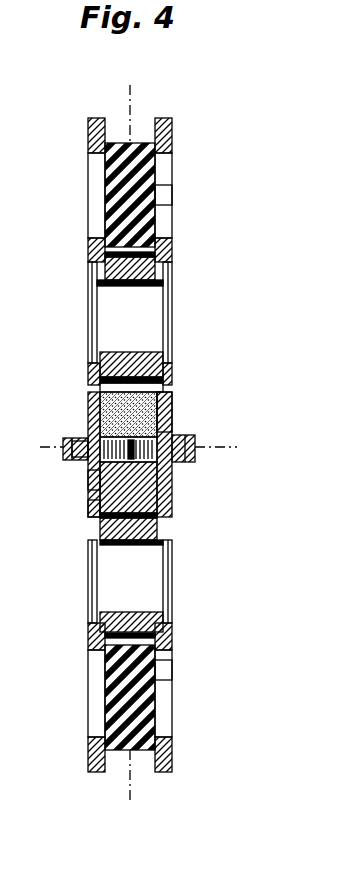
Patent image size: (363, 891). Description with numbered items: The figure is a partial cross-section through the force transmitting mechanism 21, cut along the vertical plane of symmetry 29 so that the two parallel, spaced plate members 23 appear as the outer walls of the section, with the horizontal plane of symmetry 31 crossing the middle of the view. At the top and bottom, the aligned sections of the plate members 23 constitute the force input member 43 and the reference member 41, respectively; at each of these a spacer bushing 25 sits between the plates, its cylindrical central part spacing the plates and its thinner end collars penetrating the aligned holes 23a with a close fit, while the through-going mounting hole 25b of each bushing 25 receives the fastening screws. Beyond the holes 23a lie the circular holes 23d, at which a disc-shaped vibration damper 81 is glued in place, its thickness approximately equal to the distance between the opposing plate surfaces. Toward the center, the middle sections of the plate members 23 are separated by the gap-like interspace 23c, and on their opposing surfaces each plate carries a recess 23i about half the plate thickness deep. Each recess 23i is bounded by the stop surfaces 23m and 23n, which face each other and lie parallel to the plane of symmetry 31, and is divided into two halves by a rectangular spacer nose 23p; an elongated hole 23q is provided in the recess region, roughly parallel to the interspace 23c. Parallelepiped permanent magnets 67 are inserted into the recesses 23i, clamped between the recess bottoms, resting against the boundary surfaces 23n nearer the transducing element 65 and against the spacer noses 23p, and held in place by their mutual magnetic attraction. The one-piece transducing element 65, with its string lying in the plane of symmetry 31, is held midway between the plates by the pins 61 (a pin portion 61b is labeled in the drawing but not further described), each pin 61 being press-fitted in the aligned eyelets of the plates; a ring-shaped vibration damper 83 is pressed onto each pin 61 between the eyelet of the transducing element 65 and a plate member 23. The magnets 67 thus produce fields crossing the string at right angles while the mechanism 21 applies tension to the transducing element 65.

The force transmitting mechanism 21 is at (87, 143).
The plate member 23 is at (95, 245).
The hole 23a is at (172, 277).
The interspace 23c is at (88, 437).
The circular hole 23d is at (163, 195).
The recess 23i is at (173, 318).
The boundary surface 23m is at (88, 517).
The boundary surface 23n is at (90, 482).
The spacer nose 23p is at (175, 418).
The elongated hole 23q is at (88, 384).
The spacer bushing 25 is at (112, 257).
The mounting hole 25b is at (95, 288).
The vertical plane of symmetry 29 is at (133, 795).
The horizontal plane of symmetry 31 is at (222, 444).
The reference member 41 is at (176, 478).
The force input member 43 is at (173, 143).
The pin 61 is at (68, 462).
The pin head 61b is at (66, 440).
The transducing element 65 is at (112, 560).
The permanent magnet 67 is at (165, 498).
The vibration damper 81 is at (140, 143).
The vibration damper 83 is at (180, 516).